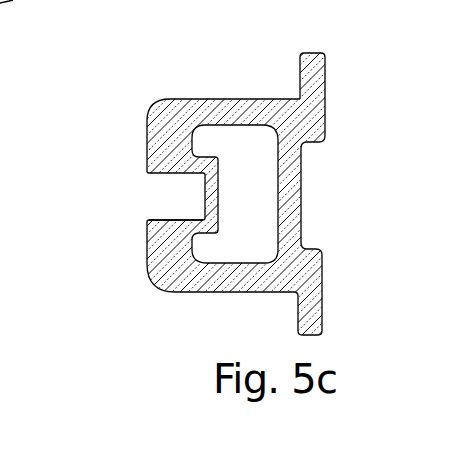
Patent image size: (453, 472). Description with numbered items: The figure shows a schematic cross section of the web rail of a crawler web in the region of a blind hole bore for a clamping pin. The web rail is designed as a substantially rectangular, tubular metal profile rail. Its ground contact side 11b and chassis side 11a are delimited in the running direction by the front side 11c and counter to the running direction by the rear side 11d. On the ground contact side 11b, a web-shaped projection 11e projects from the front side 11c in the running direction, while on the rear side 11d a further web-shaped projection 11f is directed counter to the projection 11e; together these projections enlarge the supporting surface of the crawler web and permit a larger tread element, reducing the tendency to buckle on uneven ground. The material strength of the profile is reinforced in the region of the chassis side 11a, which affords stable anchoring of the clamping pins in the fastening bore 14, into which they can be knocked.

The chassis side 11a is at (142, 252).
The ground contact side 11b is at (302, 188).
The front side 11c is at (230, 105).
The rear side 11d is at (233, 292).
The web-shaped projection 11e is at (325, 85).
The further web-shaped projection 11f is at (322, 313).
The fastening bore 14 is at (160, 192).